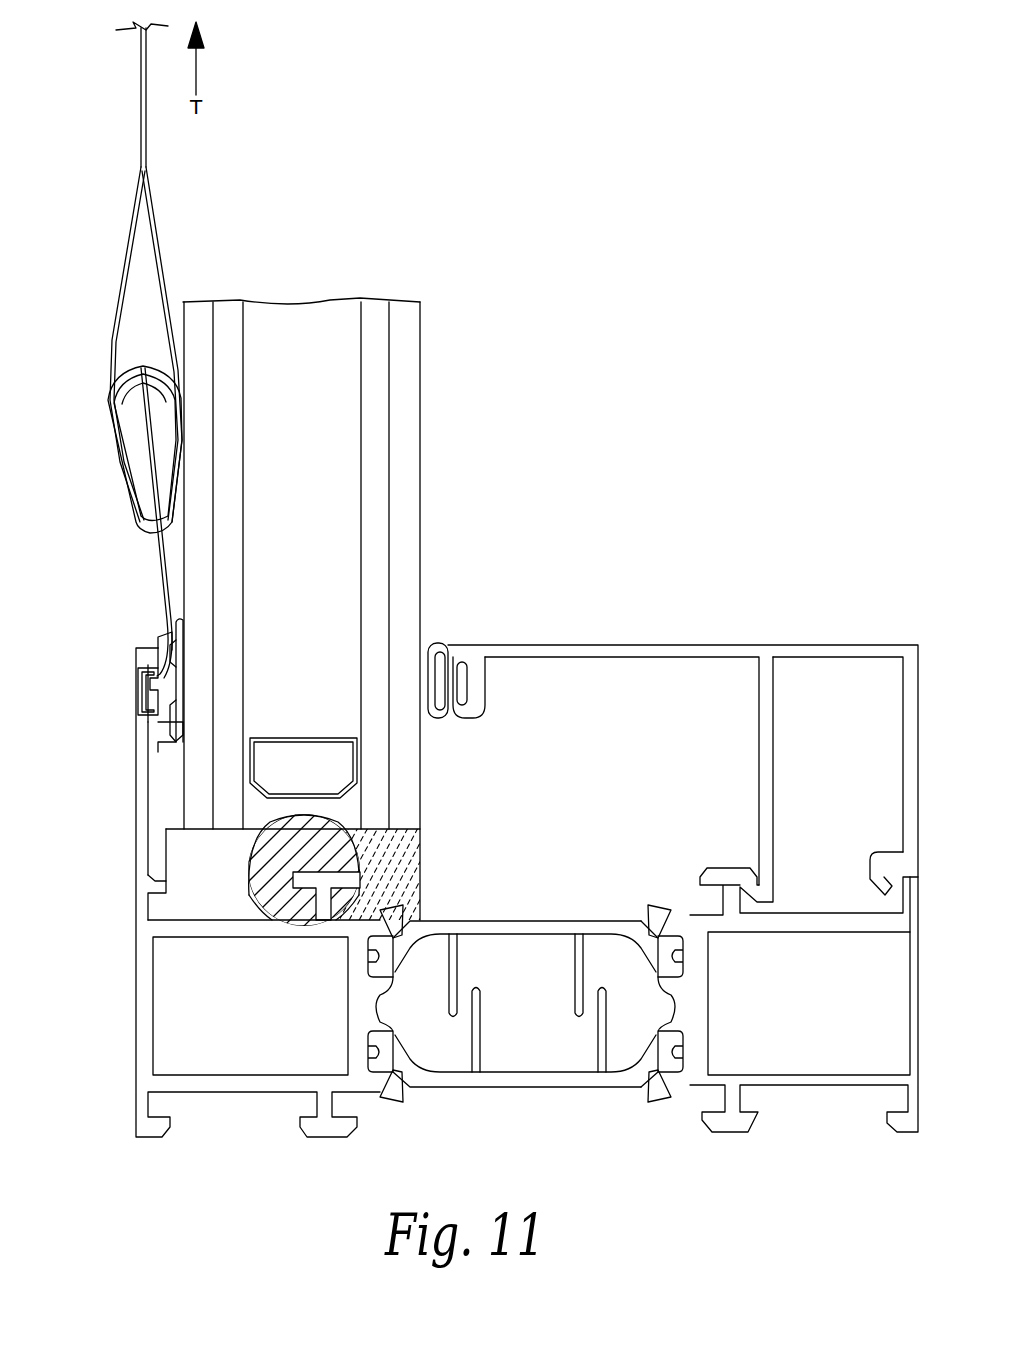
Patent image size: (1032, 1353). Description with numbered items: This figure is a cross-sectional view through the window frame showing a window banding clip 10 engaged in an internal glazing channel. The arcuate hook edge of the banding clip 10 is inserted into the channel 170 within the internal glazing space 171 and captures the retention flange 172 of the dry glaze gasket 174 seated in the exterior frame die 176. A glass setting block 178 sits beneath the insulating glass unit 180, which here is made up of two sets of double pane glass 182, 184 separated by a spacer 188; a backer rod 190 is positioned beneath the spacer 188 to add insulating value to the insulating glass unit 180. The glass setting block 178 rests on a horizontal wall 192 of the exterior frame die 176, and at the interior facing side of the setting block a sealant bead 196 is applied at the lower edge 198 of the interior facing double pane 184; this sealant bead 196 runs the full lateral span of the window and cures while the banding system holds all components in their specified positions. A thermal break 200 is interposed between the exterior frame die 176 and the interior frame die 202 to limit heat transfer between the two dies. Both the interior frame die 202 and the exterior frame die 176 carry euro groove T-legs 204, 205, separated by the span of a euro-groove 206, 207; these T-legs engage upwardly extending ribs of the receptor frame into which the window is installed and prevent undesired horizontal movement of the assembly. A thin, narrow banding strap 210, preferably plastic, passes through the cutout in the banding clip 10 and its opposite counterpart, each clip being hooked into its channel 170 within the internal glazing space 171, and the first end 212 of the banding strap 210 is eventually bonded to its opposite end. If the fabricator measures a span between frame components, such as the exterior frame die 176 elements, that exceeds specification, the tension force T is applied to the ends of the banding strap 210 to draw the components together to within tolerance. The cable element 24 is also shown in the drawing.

The window banding clip 10 is at (147, 428).
The cable 24 is at (157, 565).
The channel 170 is at (148, 706).
The internal glazing space 171 is at (160, 758).
The retention flange 172 is at (147, 683).
The dry glaze gasket 174 is at (175, 624).
The exterior frame die 176 is at (224, 932).
The glass setting block 178 is at (187, 885).
The insulating glass unit 180 is at (354, 561).
The double pane glass 182 is at (230, 327).
The interior facing double pane 184 is at (402, 308).
The spacer 188 is at (311, 740).
The backer rod 190 is at (335, 842).
The horizontal wall 192 is at (183, 933).
The sealant bead 196 is at (408, 878).
The lower edge 198 is at (427, 846).
The thermal break 200 is at (550, 1090).
The interior frame die 202 is at (900, 995).
The euro groove T-leg 204 is at (330, 1138).
The euro groove T-leg 205 is at (738, 1133).
The euro-groove 206 is at (232, 1128).
The euro-groove 207 is at (818, 1122).
The banding strap 210 is at (128, 272).
The first end 212 is at (142, 123).